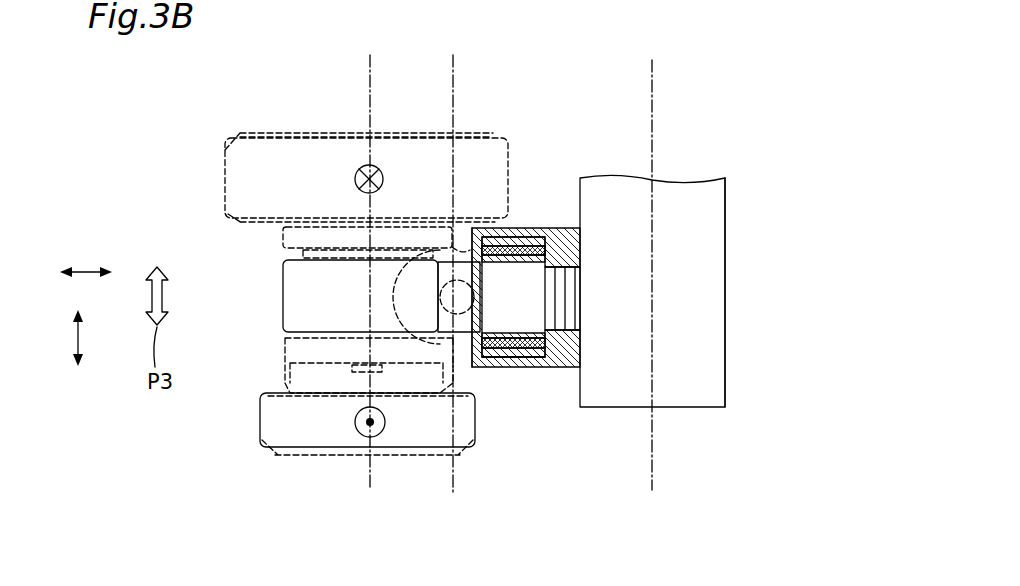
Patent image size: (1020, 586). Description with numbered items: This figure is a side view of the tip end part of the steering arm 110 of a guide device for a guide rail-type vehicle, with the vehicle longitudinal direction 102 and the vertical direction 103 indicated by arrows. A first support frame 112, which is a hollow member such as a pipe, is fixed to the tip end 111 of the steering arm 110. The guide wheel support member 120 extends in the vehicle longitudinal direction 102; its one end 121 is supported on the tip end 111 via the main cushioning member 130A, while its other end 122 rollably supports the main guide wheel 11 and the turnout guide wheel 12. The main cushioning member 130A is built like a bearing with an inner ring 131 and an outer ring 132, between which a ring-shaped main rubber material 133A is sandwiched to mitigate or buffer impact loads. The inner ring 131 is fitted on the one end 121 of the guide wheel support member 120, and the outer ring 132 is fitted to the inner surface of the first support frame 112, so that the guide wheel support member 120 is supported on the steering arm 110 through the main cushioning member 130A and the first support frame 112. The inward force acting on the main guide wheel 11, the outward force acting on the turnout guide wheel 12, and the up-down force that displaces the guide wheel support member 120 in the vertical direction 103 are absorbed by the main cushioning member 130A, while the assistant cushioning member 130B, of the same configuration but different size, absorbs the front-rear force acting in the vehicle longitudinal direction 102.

The main guide wheel 11 is at (225, 152).
The turnout guide wheel 12 is at (262, 442).
The vehicle longitudinal direction 102 is at (82, 268).
The vertical direction 103 is at (80, 330).
The steering arm 110 is at (736, 230).
The tip end of the steering arm 111 is at (702, 292).
The first support frame 112 is at (540, 227).
The guide wheel support member 120 is at (462, 345).
The one end of the guide wheel support member 121 is at (523, 358).
The other end of the guide wheel support member 122 is at (389, 305).
The main cushioning member 130A is at (565, 249).
The assistant cushioning member 130B is at (395, 289).
The inner ring 131 is at (553, 232).
The outer ring 132 is at (515, 228).
The main rubber material 133A is at (493, 227).